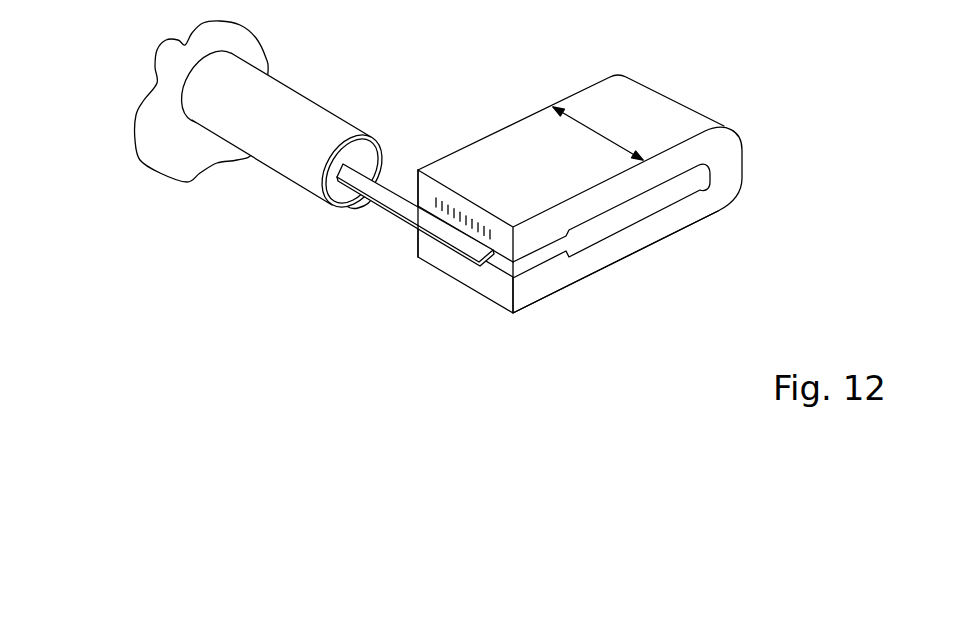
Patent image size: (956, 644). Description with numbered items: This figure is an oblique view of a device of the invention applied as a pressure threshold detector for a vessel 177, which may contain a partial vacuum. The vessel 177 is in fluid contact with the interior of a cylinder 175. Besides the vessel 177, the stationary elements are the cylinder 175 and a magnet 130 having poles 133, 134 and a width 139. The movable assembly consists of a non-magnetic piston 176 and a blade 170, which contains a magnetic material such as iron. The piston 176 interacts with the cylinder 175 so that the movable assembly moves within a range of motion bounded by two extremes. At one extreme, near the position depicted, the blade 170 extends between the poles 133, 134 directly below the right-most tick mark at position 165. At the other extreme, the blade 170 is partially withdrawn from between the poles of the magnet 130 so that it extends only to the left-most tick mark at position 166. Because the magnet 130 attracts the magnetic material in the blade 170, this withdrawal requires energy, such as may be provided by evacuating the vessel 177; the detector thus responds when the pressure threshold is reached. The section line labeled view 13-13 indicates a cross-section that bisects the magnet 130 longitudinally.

The magnet 130 is at (633, 187).
The pole 133 is at (535, 240).
The pole 134 is at (530, 293).
The width 139 is at (597, 130).
The position 165 is at (498, 214).
The position 166 is at (445, 185).
The blade 170 is at (420, 217).
The cylinder 175 is at (297, 123).
The non-magnetic piston 176 is at (353, 200).
The vessel 177 is at (153, 137).
The view 13-13 is at (536, 174).